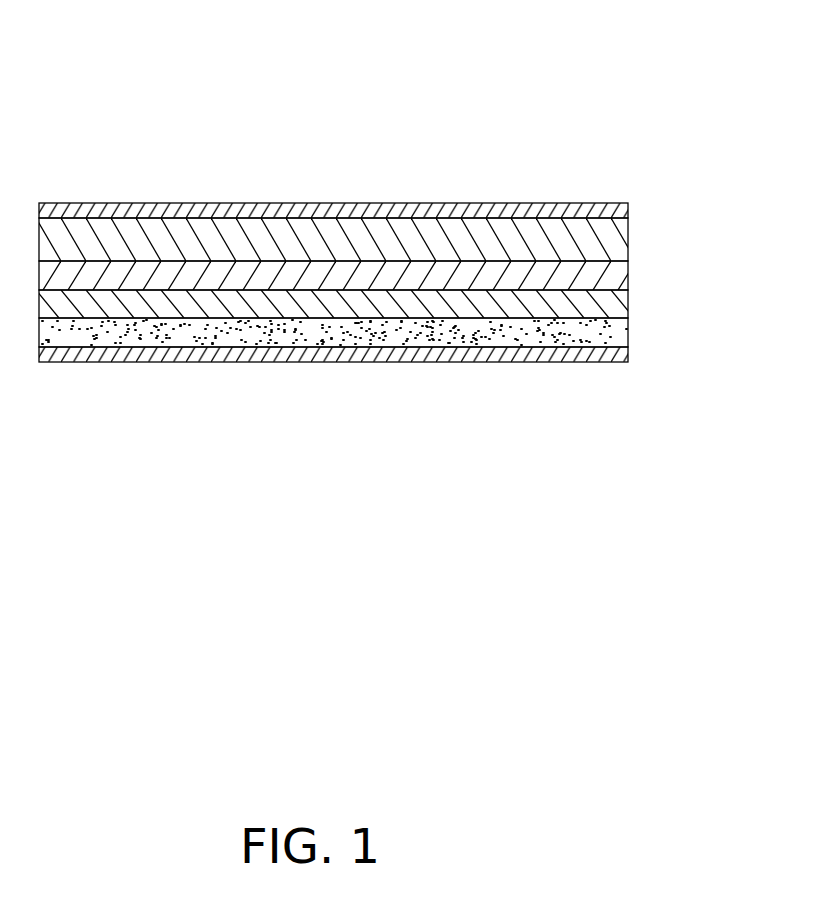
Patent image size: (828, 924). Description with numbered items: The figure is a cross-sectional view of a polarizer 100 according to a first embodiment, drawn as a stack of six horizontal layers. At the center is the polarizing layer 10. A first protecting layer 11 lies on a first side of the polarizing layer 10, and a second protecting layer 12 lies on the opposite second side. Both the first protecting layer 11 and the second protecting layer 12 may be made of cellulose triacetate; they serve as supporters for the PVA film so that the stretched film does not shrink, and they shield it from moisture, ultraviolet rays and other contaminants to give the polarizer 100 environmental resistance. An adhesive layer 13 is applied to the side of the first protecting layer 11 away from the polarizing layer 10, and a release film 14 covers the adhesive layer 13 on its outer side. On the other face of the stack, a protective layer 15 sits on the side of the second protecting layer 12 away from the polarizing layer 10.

The polarizer 100 is at (298, 47).
The protective layer 15 is at (617, 212).
The second protecting layer 12 is at (605, 242).
The polarizing layer 10 is at (605, 280).
The first protecting layer 11 is at (593, 308).
The adhesive layer 13 is at (593, 338).
The release film 14 is at (617, 355).